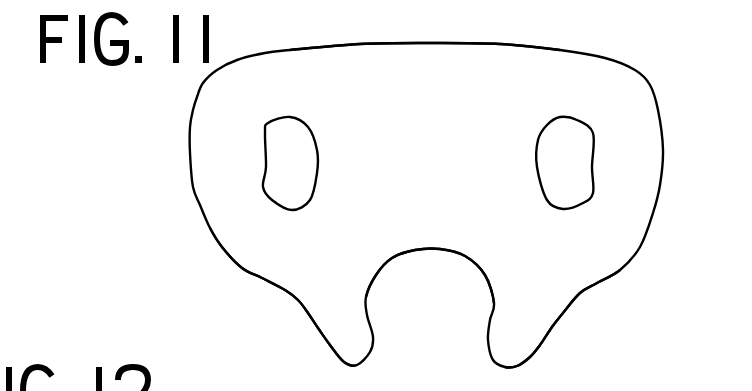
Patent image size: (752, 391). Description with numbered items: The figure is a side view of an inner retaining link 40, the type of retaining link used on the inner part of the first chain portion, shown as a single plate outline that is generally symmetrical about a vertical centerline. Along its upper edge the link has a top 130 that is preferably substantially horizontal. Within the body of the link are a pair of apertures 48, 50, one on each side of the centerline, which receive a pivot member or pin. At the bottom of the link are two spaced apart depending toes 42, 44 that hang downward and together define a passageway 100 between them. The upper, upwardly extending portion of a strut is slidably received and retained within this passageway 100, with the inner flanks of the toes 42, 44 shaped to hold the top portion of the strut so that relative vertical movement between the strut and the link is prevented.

The inner retaining link 40 is at (496, 36).
The top 130 is at (363, 43).
The aperture 48 is at (287, 113).
The aperture 50 is at (575, 118).
The depending toe 42 is at (328, 313).
The depending toe 44 is at (530, 315).
The passageway 100 is at (425, 302).